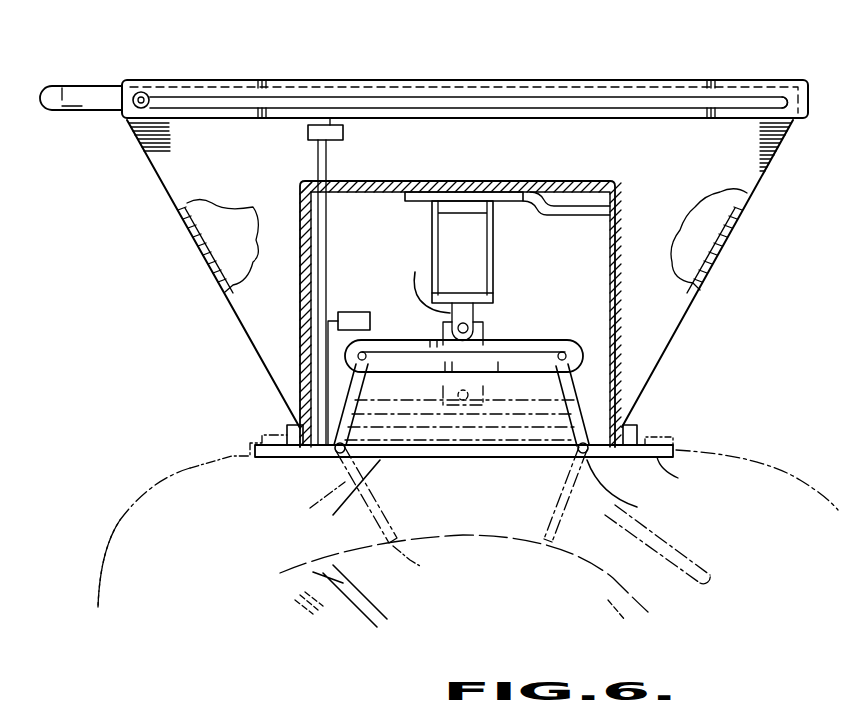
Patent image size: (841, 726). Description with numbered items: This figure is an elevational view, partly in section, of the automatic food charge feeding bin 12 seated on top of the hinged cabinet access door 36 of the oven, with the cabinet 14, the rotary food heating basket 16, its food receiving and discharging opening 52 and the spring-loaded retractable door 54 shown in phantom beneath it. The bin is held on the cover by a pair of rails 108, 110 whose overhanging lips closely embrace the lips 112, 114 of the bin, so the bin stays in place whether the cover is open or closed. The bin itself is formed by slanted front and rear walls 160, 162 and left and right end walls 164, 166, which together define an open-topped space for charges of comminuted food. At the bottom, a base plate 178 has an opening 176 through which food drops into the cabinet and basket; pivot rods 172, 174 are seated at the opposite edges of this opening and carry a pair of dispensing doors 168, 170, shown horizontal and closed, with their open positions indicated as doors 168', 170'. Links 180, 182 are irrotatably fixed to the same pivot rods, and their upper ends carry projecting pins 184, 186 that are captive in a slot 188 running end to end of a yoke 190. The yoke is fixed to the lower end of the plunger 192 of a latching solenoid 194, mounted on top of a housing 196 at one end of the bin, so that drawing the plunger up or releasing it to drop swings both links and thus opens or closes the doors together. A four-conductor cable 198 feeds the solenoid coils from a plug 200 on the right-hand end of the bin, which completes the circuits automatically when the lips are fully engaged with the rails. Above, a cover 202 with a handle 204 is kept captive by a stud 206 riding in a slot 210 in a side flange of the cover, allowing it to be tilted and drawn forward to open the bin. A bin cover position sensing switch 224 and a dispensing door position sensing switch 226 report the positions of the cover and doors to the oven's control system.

The automatic food charge feeding bin 12 is at (566, 68).
The cabinet 14 is at (100, 550).
The food heating basket 16 is at (652, 612).
The cabinet access door 36 is at (165, 478).
The food receiving and discharging opening 52 is at (610, 598).
The retractable door 54 is at (300, 595).
The rail 108 is at (248, 438).
The rail 110 is at (676, 437).
The lip 112 is at (292, 425).
The lip 114 is at (678, 484).
The slanted front wall 160 is at (212, 262).
The slanted rear wall 162 is at (717, 248).
The left end wall 164 is at (222, 236).
The right end wall 166 is at (219, 192).
The dispensing door 168 is at (455, 476).
The dispensing door open position 168' is at (440, 583).
The dispensing door 170 is at (530, 492).
The dispensing door open position 170' is at (503, 584).
The pivot rod 172 is at (330, 465).
The pivot rod 174 is at (640, 505).
The opening 176 is at (345, 505).
The base plate 178 is at (690, 448).
The link 180 is at (340, 390).
The link 182 is at (578, 378).
The projecting pin 184 is at (370, 340).
The projecting pin 186 is at (558, 345).
The slot 188 is at (512, 352).
The yoke 190 is at (572, 344).
The plunger 192 is at (415, 272).
The solenoid 194 is at (449, 252).
The housing 196 is at (440, 181).
The cable 198 is at (600, 222).
The plug 200 is at (634, 425).
The cover 202 is at (713, 85).
The handle 204 is at (56, 86).
The stud 206 is at (146, 92).
The slot 210 is at (410, 100).
The bin cover position sensing switch 224 is at (308, 133).
The dispensing door position sensing switch 226 is at (352, 312).